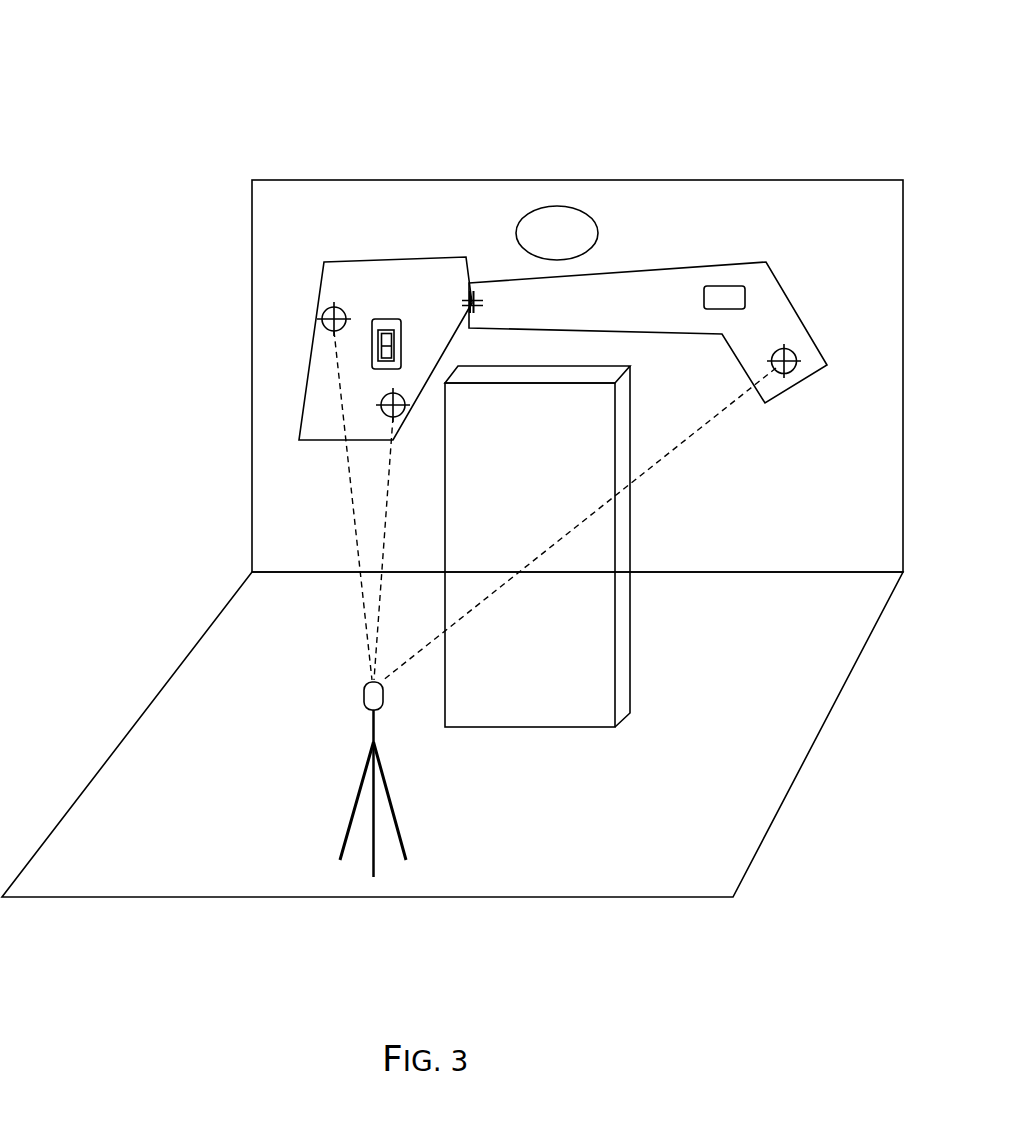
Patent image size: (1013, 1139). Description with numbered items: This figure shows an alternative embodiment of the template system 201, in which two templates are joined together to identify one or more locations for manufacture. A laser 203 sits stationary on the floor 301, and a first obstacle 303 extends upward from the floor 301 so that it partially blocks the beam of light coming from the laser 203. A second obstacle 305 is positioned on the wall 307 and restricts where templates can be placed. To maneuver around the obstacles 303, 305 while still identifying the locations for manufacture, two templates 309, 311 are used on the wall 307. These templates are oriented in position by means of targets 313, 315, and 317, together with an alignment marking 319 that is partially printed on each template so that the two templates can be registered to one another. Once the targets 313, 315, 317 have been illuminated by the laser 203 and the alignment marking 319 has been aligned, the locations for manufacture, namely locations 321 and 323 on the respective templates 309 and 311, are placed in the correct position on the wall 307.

The system 201 is at (116, 78).
The laser 203 is at (363, 693).
The floor 301 is at (820, 733).
The first obstacle 303 is at (630, 640).
The second obstacle 305 is at (548, 205).
The wall 307 is at (252, 522).
The template 309 is at (305, 397).
The template 311 is at (793, 302).
The target 313 is at (386, 412).
The target 315 is at (347, 318).
The target 317 is at (792, 370).
The alignment marking 319 is at (466, 279).
The location for manufacture 321 is at (387, 319).
The location for manufacture 323 is at (720, 285).